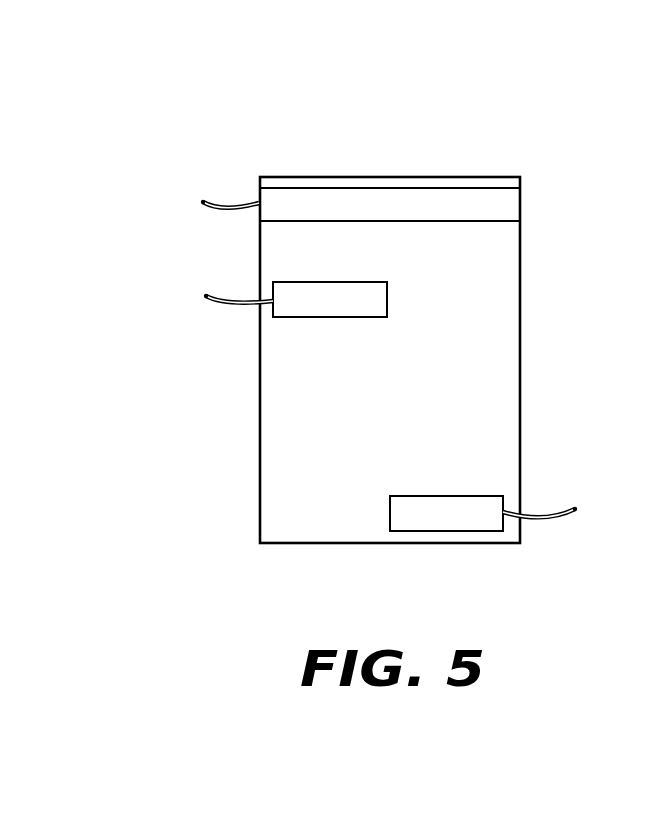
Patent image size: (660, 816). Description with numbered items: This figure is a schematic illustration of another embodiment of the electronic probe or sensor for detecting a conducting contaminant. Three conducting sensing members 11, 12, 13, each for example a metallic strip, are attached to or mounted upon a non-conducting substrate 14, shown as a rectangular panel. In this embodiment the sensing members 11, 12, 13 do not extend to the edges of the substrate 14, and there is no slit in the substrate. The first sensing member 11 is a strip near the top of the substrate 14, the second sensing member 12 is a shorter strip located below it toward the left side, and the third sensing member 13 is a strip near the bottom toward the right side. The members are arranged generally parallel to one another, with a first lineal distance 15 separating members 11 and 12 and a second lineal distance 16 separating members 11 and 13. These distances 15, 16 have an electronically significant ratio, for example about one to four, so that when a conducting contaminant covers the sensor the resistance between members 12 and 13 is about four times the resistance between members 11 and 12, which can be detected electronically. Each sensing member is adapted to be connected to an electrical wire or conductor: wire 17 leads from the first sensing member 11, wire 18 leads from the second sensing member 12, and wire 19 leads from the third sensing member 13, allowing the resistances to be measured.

The conducting sensing member 11 is at (498, 203).
The conducting sensing member 12 is at (287, 309).
The conducting sensing member 13 is at (483, 507).
The non-conducting substrate 14 is at (521, 288).
The first lineal distance 15 is at (287, 255).
The second lineal distance 16 is at (505, 373).
The electrical wire 17 is at (203, 200).
The electrical wire 18 is at (206, 294).
The electrical wire 19 is at (570, 505).